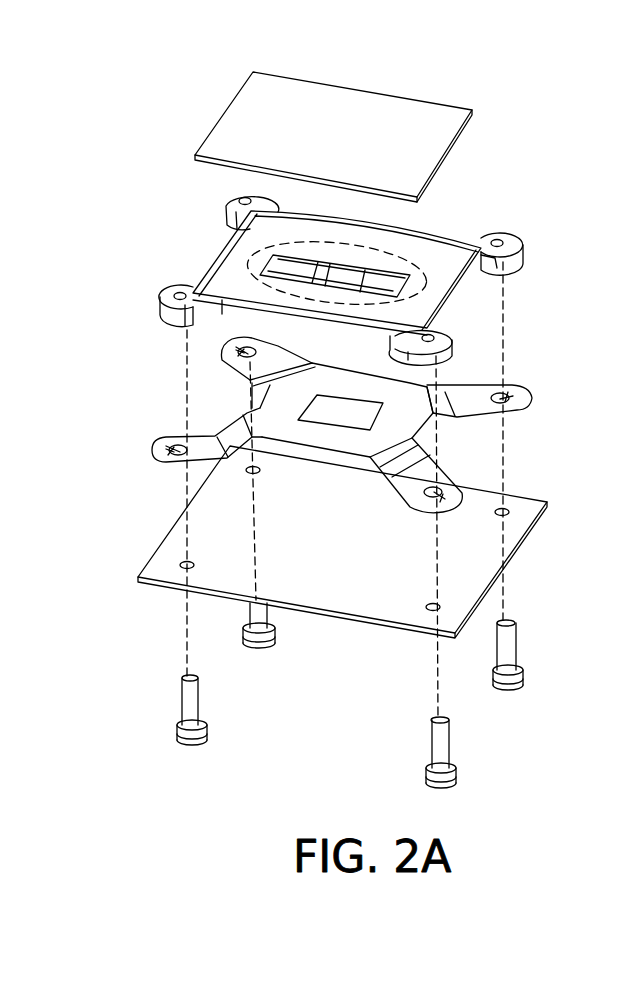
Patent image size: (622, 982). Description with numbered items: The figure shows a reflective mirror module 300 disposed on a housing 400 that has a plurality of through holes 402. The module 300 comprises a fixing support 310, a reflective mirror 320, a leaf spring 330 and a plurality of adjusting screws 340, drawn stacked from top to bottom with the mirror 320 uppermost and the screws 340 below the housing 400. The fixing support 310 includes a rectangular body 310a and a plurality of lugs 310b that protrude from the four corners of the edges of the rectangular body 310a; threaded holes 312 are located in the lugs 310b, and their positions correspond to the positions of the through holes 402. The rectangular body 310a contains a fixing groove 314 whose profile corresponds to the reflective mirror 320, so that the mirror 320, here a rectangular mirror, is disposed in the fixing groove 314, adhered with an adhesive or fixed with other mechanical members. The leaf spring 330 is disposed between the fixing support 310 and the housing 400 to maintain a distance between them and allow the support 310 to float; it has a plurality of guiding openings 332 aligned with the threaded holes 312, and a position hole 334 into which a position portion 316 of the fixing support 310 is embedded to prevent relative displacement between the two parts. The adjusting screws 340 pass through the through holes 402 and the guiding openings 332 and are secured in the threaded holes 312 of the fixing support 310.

The reflective mirror module 300 is at (585, 818).
The fixing support 310 is at (263, 272).
The rectangular body 310a is at (216, 266).
The lugs 310b is at (182, 290).
The threaded holes 312 is at (240, 199).
The fixing groove 314 is at (437, 262).
The position portion 316 is at (402, 284).
The reflective mirror 320 is at (347, 122).
The leaf spring 330 is at (332, 452).
The guiding openings 332 is at (240, 352).
The position hole 334 is at (345, 416).
The adjusting screws 340 is at (192, 708).
The housing 400 is at (342, 587).
The through holes 402 is at (250, 471).